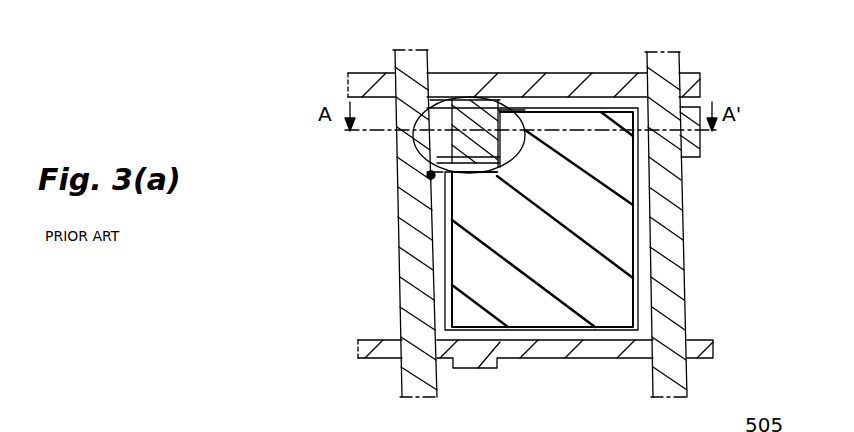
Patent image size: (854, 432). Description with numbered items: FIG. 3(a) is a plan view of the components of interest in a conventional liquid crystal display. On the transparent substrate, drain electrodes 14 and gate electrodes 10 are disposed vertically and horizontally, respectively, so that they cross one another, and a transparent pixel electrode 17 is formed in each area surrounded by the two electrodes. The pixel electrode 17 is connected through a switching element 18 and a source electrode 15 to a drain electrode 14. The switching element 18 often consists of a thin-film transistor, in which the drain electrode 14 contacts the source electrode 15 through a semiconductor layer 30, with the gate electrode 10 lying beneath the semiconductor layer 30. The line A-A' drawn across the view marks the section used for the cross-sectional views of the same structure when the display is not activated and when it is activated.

The gate electrode 10 is at (360, 86).
The drain electrode 14 is at (397, 146).
The source electrode 15 is at (496, 100).
The pixel electrode 17 is at (612, 322).
The switching element 18 is at (428, 178).
The semiconductor layer 30 is at (457, 72).